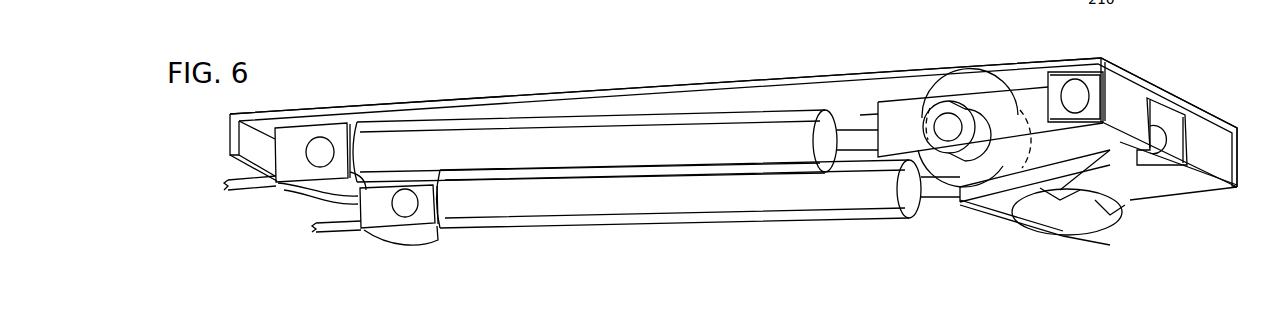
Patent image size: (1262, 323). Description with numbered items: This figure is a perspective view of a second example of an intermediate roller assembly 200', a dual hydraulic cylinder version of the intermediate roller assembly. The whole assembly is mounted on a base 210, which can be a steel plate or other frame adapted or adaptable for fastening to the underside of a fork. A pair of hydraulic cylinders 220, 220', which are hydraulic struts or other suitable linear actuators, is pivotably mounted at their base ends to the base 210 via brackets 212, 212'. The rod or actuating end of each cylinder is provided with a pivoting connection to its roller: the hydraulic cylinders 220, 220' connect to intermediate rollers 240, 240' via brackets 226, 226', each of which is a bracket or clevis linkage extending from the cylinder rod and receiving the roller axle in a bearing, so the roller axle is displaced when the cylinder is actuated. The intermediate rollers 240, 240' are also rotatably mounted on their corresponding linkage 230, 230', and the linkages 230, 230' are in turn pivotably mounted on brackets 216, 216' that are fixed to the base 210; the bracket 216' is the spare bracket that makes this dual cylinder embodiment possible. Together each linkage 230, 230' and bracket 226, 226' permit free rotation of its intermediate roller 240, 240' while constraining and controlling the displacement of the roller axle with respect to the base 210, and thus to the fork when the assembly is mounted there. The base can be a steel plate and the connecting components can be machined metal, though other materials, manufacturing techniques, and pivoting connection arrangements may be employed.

The intermediate roller assembly 200' is at (741, 106).
The base 210 is at (460, 104).
The bracket 212 is at (295, 178).
The bracket 212' is at (371, 228).
The bracket 216 is at (1056, 64).
The bracket 216' is at (1191, 166).
The hydraulic cylinder 220 is at (615, 117).
The hydraulic cylinder 220' is at (699, 215).
The bracket 226 is at (982, 173).
The bracket 226' is at (1035, 200).
The linkage 230 is at (1169, 108).
The linkage 230' is at (1148, 211).
The intermediate roller 240 is at (974, 164).
The intermediate roller 240' is at (1068, 241).